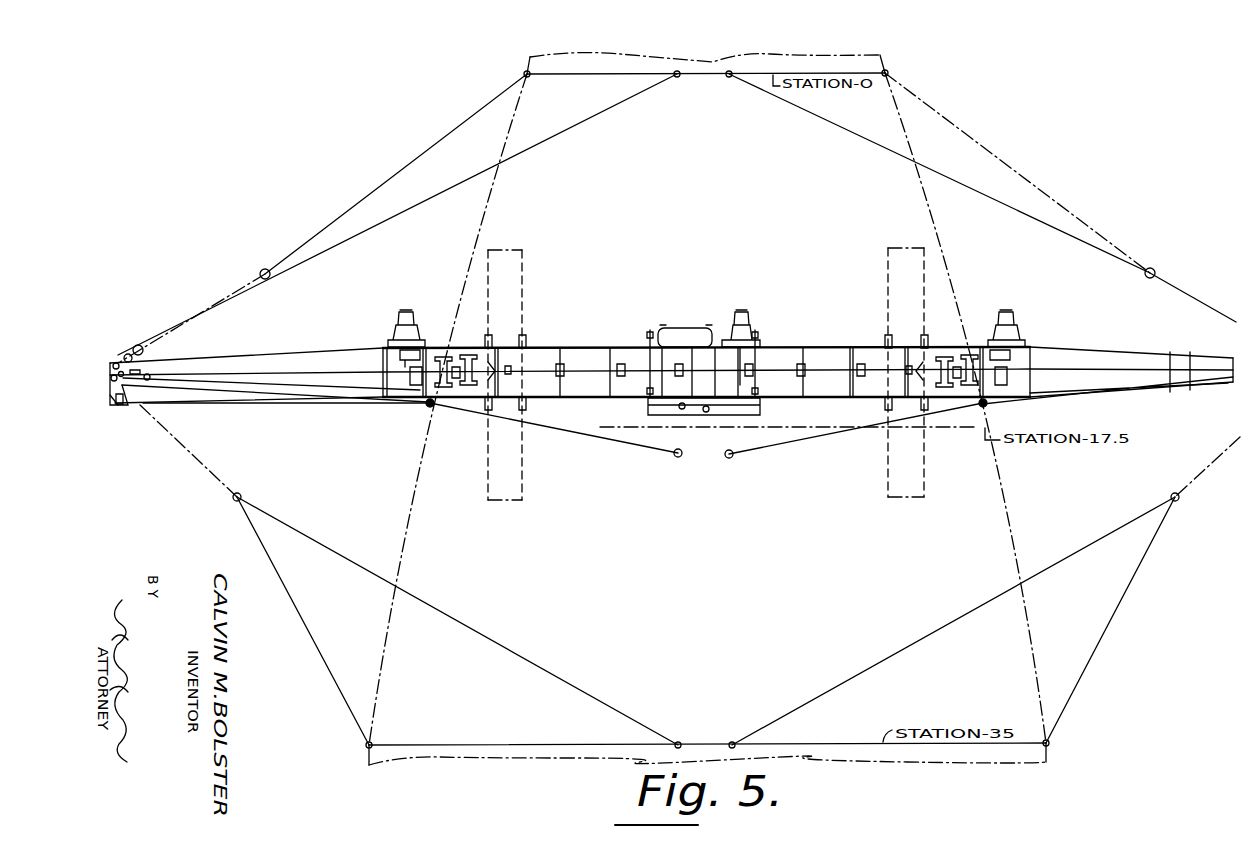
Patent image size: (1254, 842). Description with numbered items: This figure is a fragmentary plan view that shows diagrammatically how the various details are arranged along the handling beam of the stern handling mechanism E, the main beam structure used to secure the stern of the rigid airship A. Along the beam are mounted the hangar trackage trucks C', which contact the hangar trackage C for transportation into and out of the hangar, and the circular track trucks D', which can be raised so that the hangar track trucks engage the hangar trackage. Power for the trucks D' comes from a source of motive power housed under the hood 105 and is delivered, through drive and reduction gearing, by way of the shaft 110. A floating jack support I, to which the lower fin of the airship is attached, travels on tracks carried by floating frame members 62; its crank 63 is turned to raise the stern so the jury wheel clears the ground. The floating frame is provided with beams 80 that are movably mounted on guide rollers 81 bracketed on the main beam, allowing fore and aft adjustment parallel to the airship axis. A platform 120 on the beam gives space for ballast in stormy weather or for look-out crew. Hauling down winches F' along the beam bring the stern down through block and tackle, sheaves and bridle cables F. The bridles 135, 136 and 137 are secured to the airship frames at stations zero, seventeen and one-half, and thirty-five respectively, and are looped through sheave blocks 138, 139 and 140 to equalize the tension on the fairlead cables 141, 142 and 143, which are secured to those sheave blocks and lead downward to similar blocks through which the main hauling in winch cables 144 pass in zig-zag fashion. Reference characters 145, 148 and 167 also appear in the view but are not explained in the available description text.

The bridle cable 135 is at (453, 183).
The sheave block 138 is at (264, 269).
The fairlead cable 141 is at (215, 312).
The wing tip fitting 145 is at (120, 353).
The fairlead cable 142 is at (187, 380).
The main hauling in winch cable 144 is at (300, 376).
The lamp 148 is at (398, 322).
The fairlead cable 143 is at (220, 455).
The tip fitting 167 is at (120, 406).
The sheave block 140 is at (232, 501).
The bridle cable 137 is at (330, 556).
The sheave block 139 is at (425, 408).
The bridle cable 136 is at (630, 446).
The crank 63 is at (680, 458).
The floating frame member 62 is at (762, 412).
The shaft 110 is at (708, 383).
The beam 80 is at (648, 350).
The guide roller 81 is at (652, 332).
The platform 120 is at (683, 336).
The hood 105 is at (742, 322).
The hangar trackage C is at (703, 374).
The hangar trackage truck C' is at (706, 322).
The circular track truck D' is at (714, 334).
The stern handling mechanism E is at (585, 347).
The bridle cable F is at (716, 382).
The hauling down winch F' is at (730, 370).
The floating jack support I is at (728, 412).
The rigid airship A is at (378, 625).